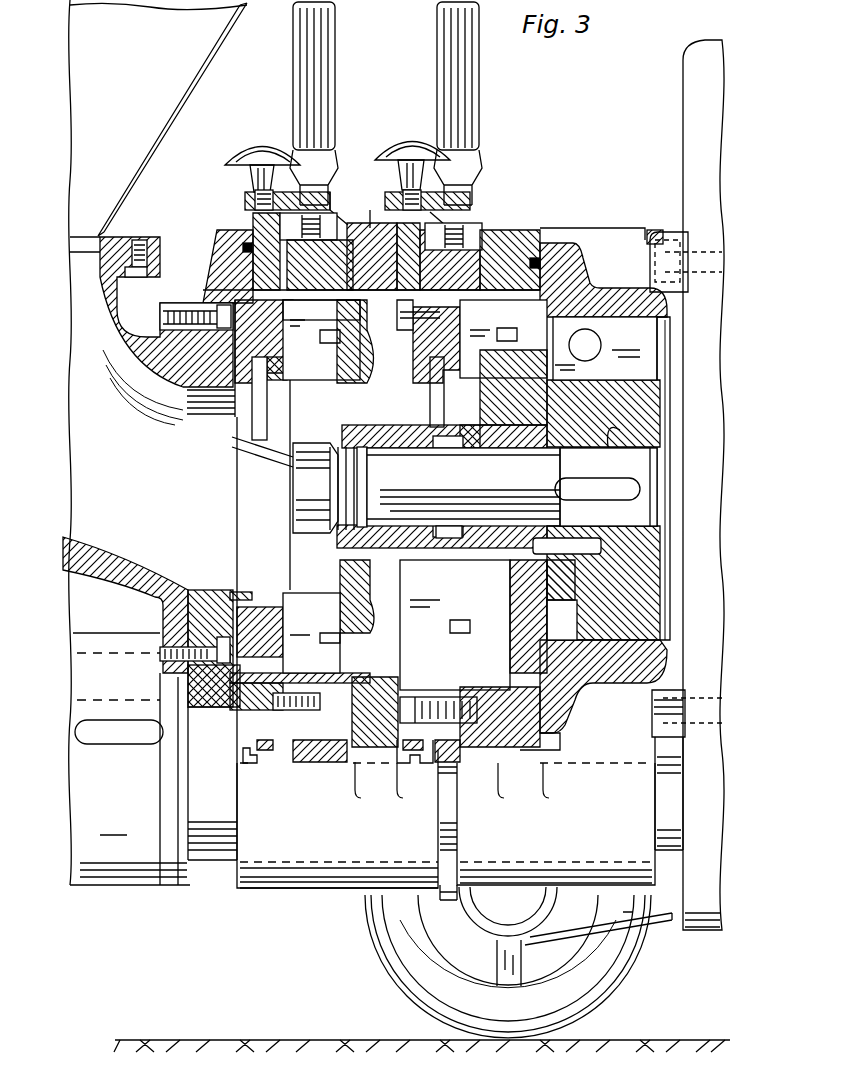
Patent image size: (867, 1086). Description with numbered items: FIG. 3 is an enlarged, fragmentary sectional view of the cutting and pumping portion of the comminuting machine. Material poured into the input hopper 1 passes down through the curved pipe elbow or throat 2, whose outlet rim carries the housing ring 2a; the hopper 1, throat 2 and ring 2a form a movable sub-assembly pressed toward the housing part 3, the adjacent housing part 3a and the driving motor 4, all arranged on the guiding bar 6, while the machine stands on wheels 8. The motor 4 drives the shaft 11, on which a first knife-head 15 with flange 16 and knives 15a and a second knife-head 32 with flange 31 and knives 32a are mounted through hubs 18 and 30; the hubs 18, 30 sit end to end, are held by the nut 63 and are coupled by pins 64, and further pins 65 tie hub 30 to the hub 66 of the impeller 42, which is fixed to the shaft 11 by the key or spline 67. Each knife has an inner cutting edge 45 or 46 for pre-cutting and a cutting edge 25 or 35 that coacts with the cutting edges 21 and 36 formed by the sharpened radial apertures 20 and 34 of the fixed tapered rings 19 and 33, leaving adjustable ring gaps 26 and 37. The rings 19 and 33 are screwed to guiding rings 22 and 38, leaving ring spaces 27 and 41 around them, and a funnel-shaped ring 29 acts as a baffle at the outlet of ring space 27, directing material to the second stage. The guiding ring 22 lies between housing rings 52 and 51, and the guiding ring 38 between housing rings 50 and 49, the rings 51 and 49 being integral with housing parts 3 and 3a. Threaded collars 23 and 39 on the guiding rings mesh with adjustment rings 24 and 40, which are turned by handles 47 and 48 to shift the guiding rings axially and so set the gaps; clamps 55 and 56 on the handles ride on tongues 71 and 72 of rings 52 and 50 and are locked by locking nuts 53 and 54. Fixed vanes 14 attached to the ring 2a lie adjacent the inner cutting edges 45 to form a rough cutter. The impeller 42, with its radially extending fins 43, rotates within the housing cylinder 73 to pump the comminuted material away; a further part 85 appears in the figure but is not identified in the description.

The input hopper 1 is at (178, 77).
The curved pipe elbow or throat 2 is at (103, 316).
The housing ring 2a is at (225, 263).
The housing part or support 3 is at (303, 880).
The housing part 3a is at (612, 880).
The driving motor 4 is at (705, 133).
The guiding bar 6 is at (217, 863).
The casters or wheels 8 is at (630, 963).
The shaft 11 is at (635, 462).
The fixed inner guiding and cutting tools or vanes 14 is at (310, 568).
The knife-head 15 is at (322, 400).
The knives 15a is at (310, 380).
The flange 16 is at (365, 395).
The hub 18 is at (418, 456).
The tapered ring or shell 19 is at (205, 306).
The radial apertures 20 is at (223, 722).
The cutting edges 21 is at (323, 355).
The guiding ring 22 is at (340, 214).
The outer threaded collar 23 is at (265, 228).
The adjustment ring 24 is at (337, 205).
The cutting edge 25 is at (263, 412).
The ring gap 26 is at (293, 762).
The ring space 27 is at (365, 388).
The funnel-shaped ring 29 is at (400, 355).
The hub 30 is at (418, 448).
The flange 31 is at (553, 377).
The knife-head 32 is at (500, 425).
The knives 32a is at (470, 448).
The tapered ring or shell 33 is at (447, 357).
The radial apertures 34 is at (550, 735).
The cutting edge 35 is at (540, 347).
The cutting edges 36 is at (487, 350).
The ring gap 37 is at (478, 723).
The guiding ring 38 is at (483, 230).
The outer threaded collar 39 is at (453, 227).
The adjustment ring 40 is at (392, 200).
The ring space 41 is at (563, 272).
The impeller 42 is at (643, 398).
The fins 43 is at (648, 356).
The inner cutting edge 45 is at (293, 587).
The inner cutting edge 46 is at (493, 590).
The handle 47 is at (330, 34).
The handle 48 is at (455, 30).
The housing ring 49 is at (528, 233).
The housing ring 50 is at (440, 213).
The housing ring 51 is at (373, 230).
The housing ring 52 is at (258, 245).
The locking nut 53 is at (403, 137).
The locking nut 54 is at (250, 140).
The clamp 55 is at (253, 200).
The clamp 56 is at (422, 197).
The nut 63 is at (307, 497).
The spaced pins 64 is at (450, 537).
The pins 65 is at (557, 543).
The hub 66 is at (617, 414).
The key or spline 67 is at (630, 488).
The tongue 71 is at (246, 202).
The tongue 72 is at (423, 752).
The housing cylinder 73 is at (631, 295).
The pillar 85 is at (275, 392).